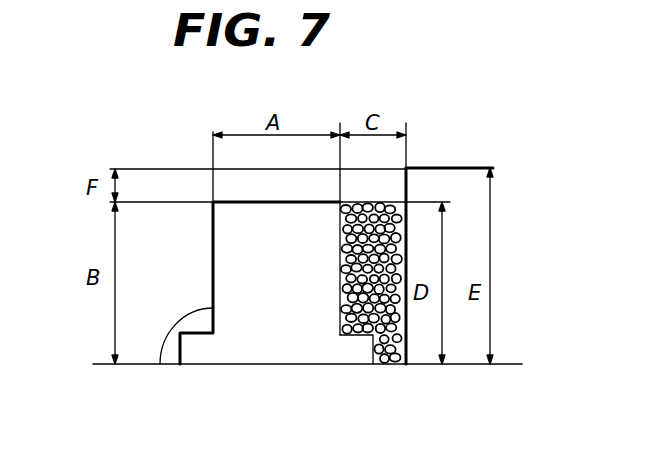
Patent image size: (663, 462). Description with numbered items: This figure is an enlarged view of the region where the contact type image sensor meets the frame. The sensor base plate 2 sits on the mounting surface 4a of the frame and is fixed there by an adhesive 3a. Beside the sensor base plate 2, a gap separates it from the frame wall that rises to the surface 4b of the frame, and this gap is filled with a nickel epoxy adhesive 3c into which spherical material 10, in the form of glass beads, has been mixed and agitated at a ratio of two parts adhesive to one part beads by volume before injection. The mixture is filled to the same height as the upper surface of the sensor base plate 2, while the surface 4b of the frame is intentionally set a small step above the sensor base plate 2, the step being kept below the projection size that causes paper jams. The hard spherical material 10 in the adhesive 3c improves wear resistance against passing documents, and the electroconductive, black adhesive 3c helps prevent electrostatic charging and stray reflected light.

The sensor base plate 2 is at (247, 233).
The adhesive 3a is at (200, 320).
The nickel epoxy adhesive 3c is at (410, 262).
The mounting surface 4a is at (102, 367).
The surface 4b is at (453, 168).
The spherical material 10 is at (408, 333).